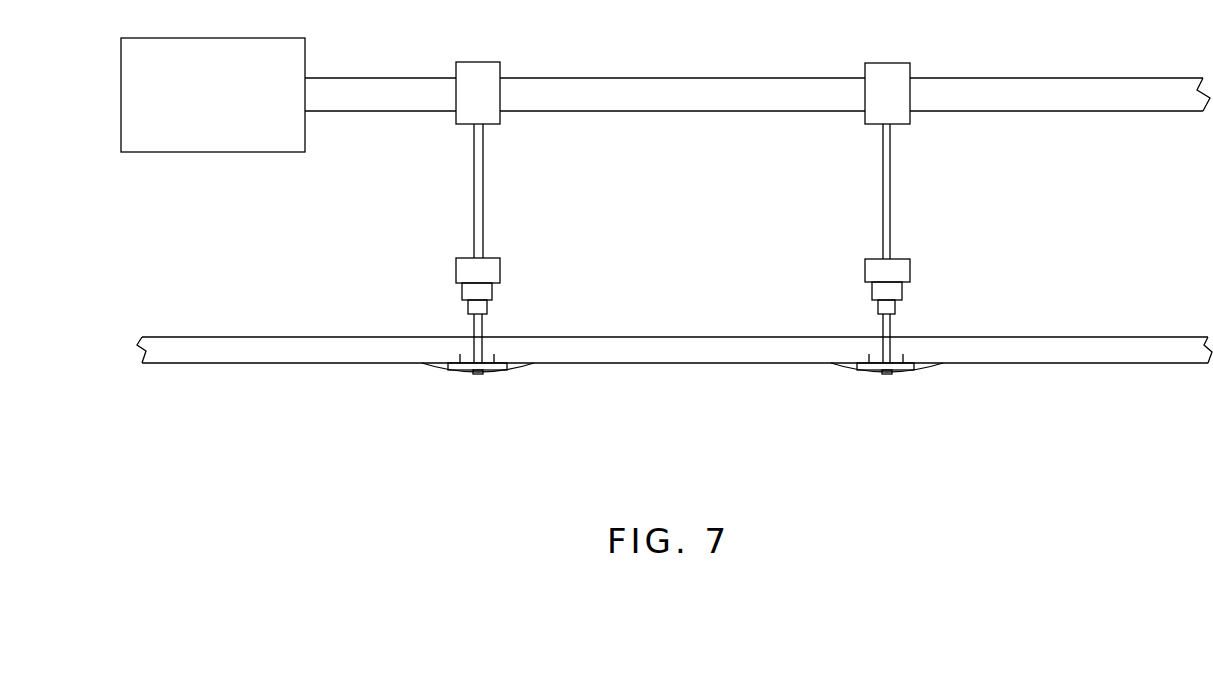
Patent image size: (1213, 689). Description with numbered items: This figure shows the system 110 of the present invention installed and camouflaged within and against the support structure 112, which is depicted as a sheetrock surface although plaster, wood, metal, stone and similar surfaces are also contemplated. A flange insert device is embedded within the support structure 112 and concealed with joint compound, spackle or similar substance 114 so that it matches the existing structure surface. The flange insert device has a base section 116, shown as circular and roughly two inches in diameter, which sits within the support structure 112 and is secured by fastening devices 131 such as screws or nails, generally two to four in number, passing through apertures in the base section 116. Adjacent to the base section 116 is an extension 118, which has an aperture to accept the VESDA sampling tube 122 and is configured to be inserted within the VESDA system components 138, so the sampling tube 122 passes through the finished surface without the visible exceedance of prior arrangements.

The system 110 is at (403, 417).
The support structure 112 is at (292, 349).
The joint compound, spackle or similar substance 114 is at (515, 373).
The base section 116 is at (457, 372).
The extension 118 is at (460, 356).
The VESDA sampling tube 122 is at (483, 180).
The fastening devices 131 is at (494, 357).
The VESDA system components 138 is at (500, 267).